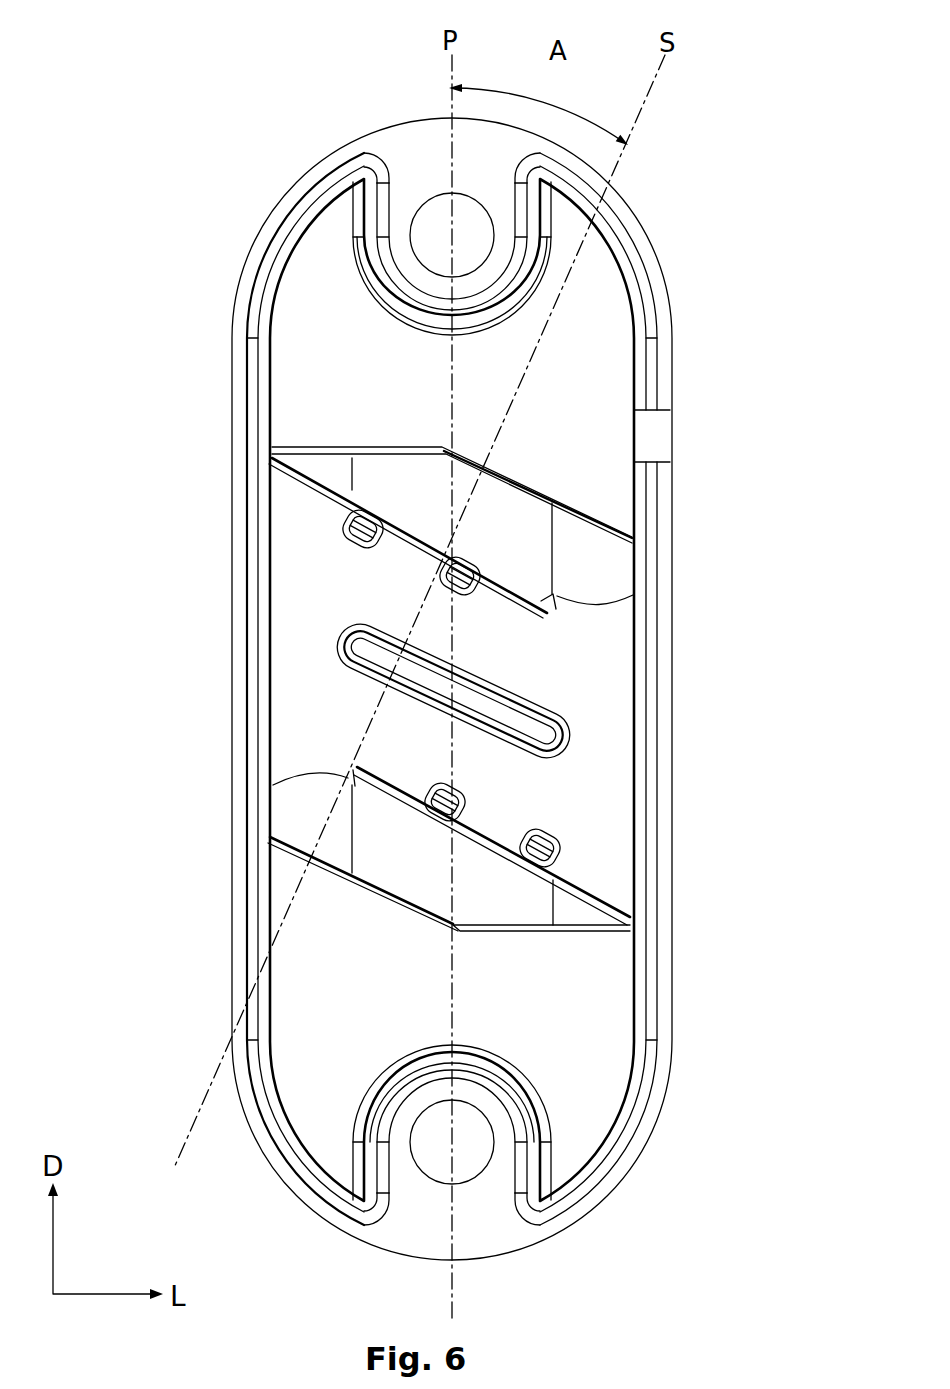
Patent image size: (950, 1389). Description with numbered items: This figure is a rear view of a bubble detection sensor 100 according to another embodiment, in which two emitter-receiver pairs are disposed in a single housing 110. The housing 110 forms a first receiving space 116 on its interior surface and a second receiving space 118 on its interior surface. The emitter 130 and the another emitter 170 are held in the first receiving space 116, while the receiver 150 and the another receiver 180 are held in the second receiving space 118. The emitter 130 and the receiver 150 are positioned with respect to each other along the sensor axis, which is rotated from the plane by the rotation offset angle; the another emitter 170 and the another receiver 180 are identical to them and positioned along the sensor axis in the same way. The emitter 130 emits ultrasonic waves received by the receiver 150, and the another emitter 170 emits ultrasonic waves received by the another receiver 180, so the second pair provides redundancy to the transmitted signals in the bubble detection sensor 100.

The bubble detection sensor 100 is at (128, 32).
The housing 110 is at (233, 418).
The first receiving space 116 is at (497, 508).
The second receiving space 118 is at (492, 910).
The emitter 130 is at (375, 505).
The receiver 150 is at (387, 795).
The another emitter 170 is at (500, 578).
The another receiver 180 is at (530, 864).